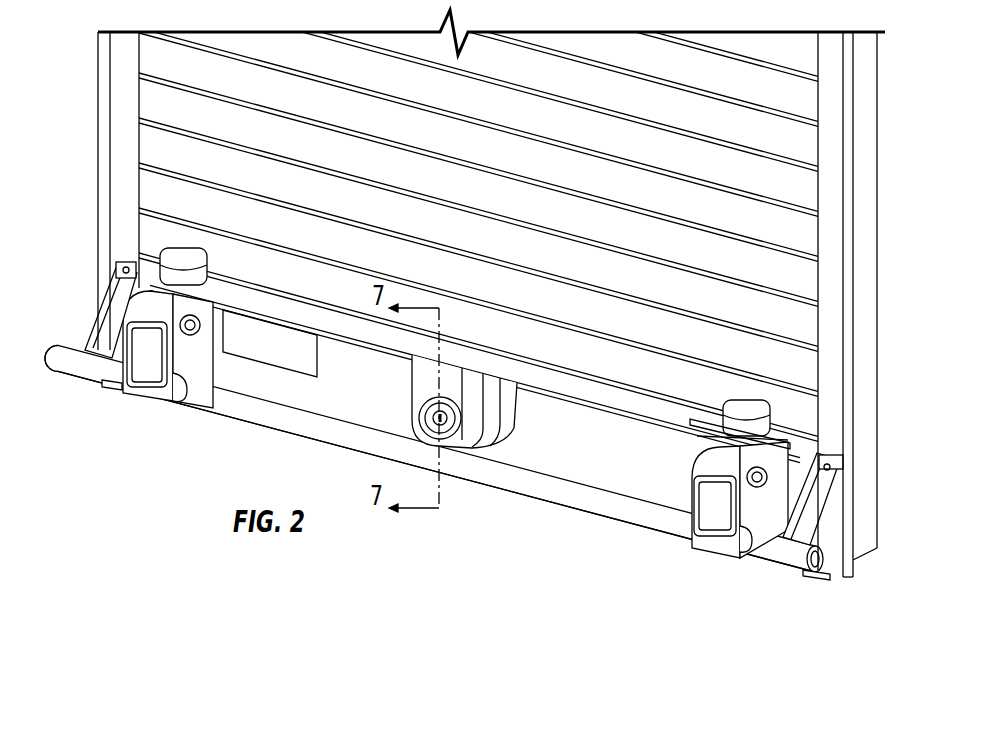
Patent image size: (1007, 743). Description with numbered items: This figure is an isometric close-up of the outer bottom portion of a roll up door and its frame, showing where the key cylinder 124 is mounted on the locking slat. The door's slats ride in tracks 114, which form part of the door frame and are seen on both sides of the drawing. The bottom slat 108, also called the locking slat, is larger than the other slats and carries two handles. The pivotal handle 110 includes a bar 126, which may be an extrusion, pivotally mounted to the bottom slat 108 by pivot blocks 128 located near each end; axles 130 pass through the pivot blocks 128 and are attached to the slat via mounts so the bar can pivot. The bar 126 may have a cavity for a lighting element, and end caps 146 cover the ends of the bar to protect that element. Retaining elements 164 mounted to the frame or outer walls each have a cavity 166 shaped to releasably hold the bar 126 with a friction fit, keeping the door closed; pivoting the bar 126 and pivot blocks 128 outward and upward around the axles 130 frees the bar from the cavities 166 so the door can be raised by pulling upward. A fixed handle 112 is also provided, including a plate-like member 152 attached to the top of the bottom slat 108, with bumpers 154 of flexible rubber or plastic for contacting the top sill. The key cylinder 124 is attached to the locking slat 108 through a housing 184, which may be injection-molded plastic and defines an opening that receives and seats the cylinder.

The bottom slat 108 is at (588, 455).
The handle 110 is at (603, 520).
The fixed handle 112 is at (563, 385).
The tracks 114 is at (125, 143).
The key cylinder 124 is at (458, 440).
The bar 126 is at (430, 473).
The pivot blocks 128 is at (152, 402).
The axles 130 is at (193, 318).
The end caps 146 is at (822, 576).
The plate-like member 152 is at (677, 407).
The bumpers 154 is at (186, 250).
The retaining elements 164 is at (103, 323).
The cavity 166 is at (120, 358).
The housing 184 is at (412, 400).